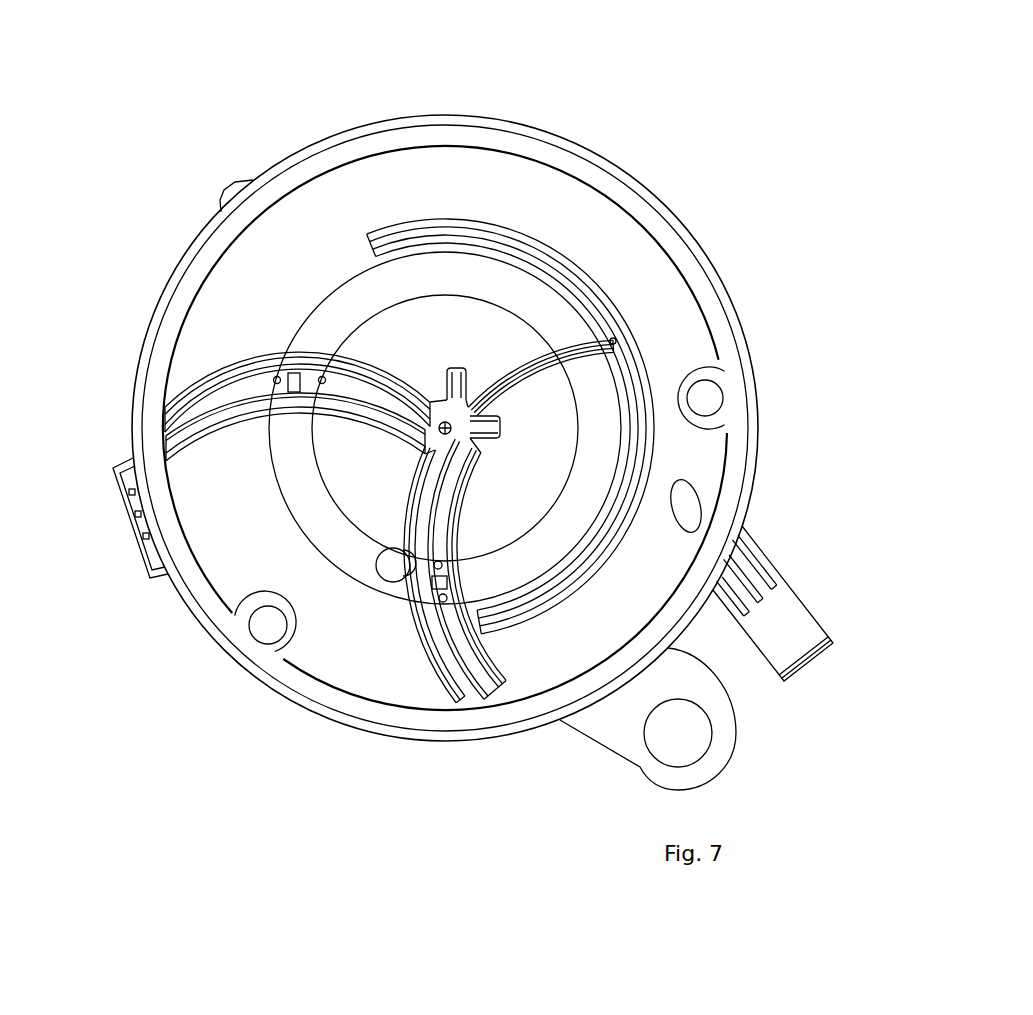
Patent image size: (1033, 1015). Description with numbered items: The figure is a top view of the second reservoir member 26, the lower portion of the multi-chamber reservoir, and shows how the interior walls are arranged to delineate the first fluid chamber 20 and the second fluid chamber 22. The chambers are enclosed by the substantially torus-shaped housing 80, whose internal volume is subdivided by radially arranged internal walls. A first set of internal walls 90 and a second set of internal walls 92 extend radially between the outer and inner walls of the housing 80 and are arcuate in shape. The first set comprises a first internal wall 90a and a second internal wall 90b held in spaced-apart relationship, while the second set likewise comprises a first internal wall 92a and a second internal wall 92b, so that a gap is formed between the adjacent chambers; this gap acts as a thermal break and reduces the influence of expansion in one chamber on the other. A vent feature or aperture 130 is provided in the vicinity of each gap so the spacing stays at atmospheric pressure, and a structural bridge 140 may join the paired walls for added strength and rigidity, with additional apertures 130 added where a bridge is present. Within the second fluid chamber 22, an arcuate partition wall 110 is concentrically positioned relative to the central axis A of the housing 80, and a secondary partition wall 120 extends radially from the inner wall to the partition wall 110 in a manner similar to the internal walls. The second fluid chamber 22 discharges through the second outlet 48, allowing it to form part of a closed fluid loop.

The first fluid chamber 20 is at (232, 566).
The second fluid chamber 22 is at (455, 172).
The second reservoir member 26 is at (753, 462).
The second outlet 48 is at (797, 610).
The housing 80 is at (605, 158).
The first set of internal walls 90 is at (228, 433).
The first internal wall 90a is at (260, 427).
The second internal wall 90b is at (210, 388).
The second set of internal walls 92 is at (482, 629).
The first internal wall 92a is at (507, 682).
The second internal wall 92b is at (457, 672).
The partition wall 110 is at (603, 310).
The secondary partition wall 120 is at (532, 358).
The vent feature or aperture 130 is at (277, 377).
The structural bridge 140 is at (300, 378).
The central axis A is at (440, 432).